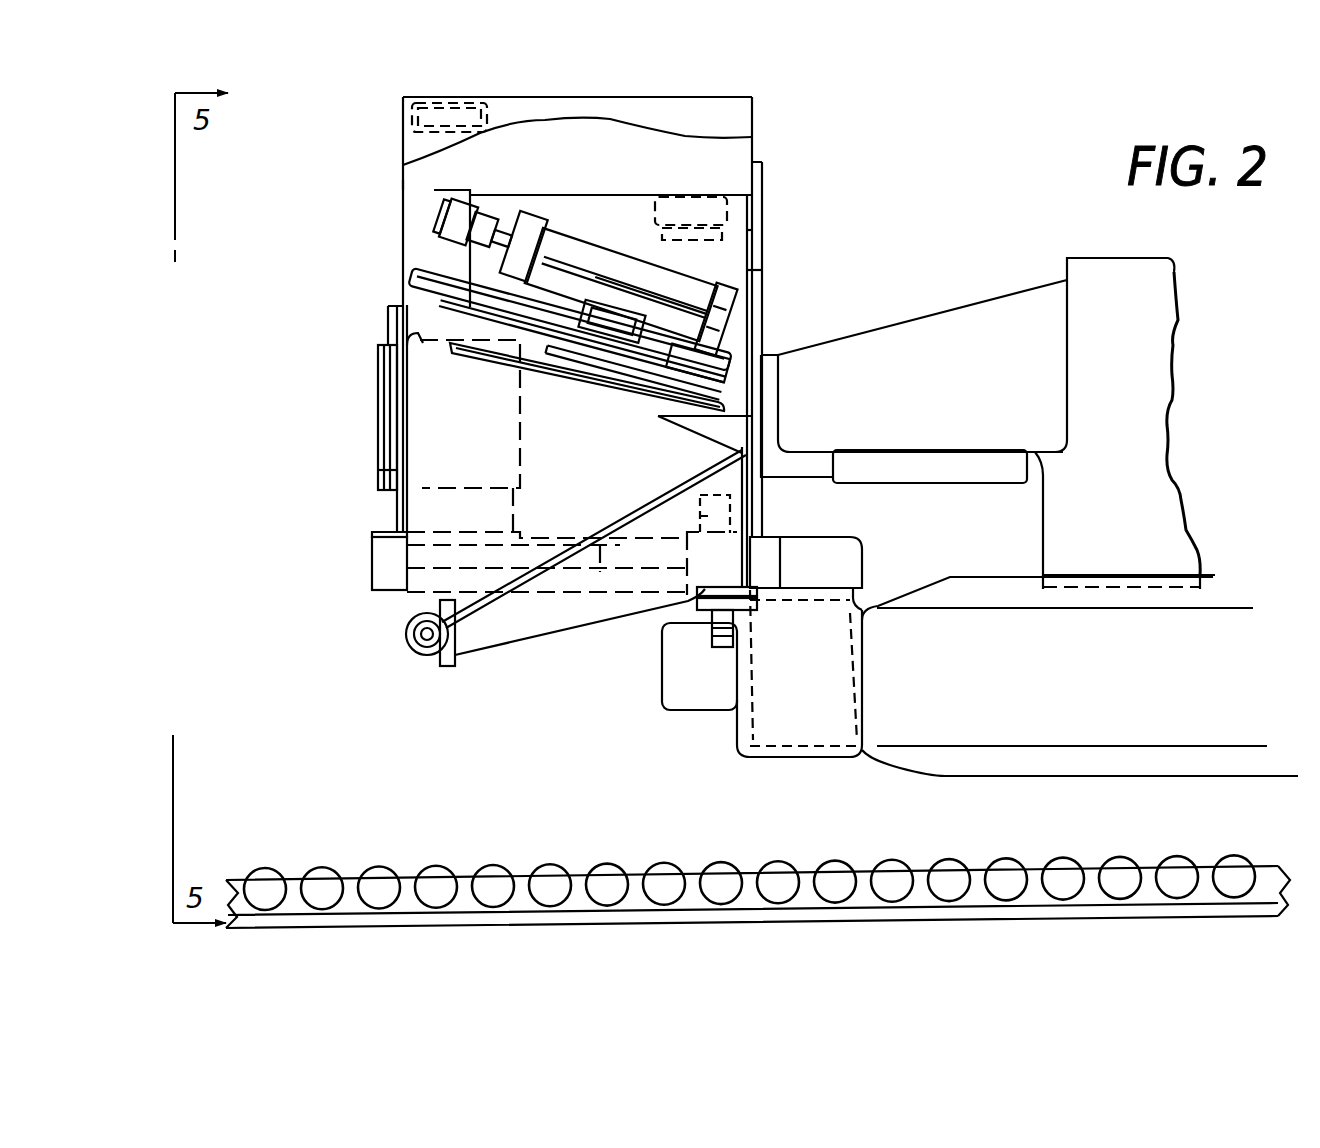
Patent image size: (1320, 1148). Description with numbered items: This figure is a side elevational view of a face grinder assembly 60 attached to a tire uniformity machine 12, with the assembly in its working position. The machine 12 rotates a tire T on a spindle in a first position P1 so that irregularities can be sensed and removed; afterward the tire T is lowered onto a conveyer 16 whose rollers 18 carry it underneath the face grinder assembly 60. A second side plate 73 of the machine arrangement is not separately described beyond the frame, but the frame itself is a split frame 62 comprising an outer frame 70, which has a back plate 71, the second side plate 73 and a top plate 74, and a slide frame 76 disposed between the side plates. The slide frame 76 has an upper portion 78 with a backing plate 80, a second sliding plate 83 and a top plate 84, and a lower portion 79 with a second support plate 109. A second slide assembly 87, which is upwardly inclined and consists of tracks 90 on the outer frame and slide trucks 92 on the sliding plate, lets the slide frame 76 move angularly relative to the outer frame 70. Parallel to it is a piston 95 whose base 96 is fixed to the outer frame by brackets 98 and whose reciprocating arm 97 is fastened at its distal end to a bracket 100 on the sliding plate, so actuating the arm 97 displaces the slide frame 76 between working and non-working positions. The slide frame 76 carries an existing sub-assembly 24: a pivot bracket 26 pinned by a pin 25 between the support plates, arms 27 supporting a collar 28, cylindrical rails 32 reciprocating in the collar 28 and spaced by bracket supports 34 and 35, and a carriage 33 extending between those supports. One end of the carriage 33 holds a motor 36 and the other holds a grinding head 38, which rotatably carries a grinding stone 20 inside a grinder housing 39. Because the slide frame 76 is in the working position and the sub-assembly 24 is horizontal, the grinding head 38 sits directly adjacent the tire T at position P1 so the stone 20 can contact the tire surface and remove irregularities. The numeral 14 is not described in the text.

The tire uniformity machine 12 is at (931, 302).
The press member 14 is at (983, 317).
The conveyer 16 is at (522, 864).
The rollers 18 is at (382, 874).
The grinding stone 20 is at (832, 687).
The sub-assembly 24 is at (366, 531).
The pin 25 is at (425, 638).
The pivot bracket 26 is at (445, 660).
The arms 27 is at (503, 627).
The collar 28 is at (423, 583).
The cylindrical rails 32 is at (605, 555).
The carriage 33 is at (638, 583).
The bracket support 34 is at (387, 587).
The bracket support 35 is at (717, 557).
The motor 36 is at (392, 382).
The grinding head 38 is at (809, 758).
The grinder housing 39 is at (797, 732).
The face grinder assembly 60 is at (392, 182).
The split frame 62 is at (508, 94).
The outer frame 70 is at (766, 113).
The back plate 71 is at (758, 172).
The second side plate 73 is at (705, 107).
The top plate 74 is at (437, 103).
The slide frame 76 is at (618, 188).
The upper portion 78 is at (435, 242).
The lower portion 79 is at (408, 468).
The backing plate 80 is at (750, 270).
The second sliding plate 83 is at (728, 252).
The top plate 84 is at (737, 210).
The second slide assembly 87 is at (546, 345).
The tracks 90 is at (445, 282).
The slide trucks 92 is at (668, 393).
The piston 95 is at (580, 235).
The base 96 is at (613, 260).
The reciprocating arm 97 is at (490, 222).
The brackets 98 is at (530, 227).
The bracket 100 is at (453, 222).
The second support plate 109 is at (422, 418).
The tire T is at (950, 587).
The first position P1 is at (1112, 786).